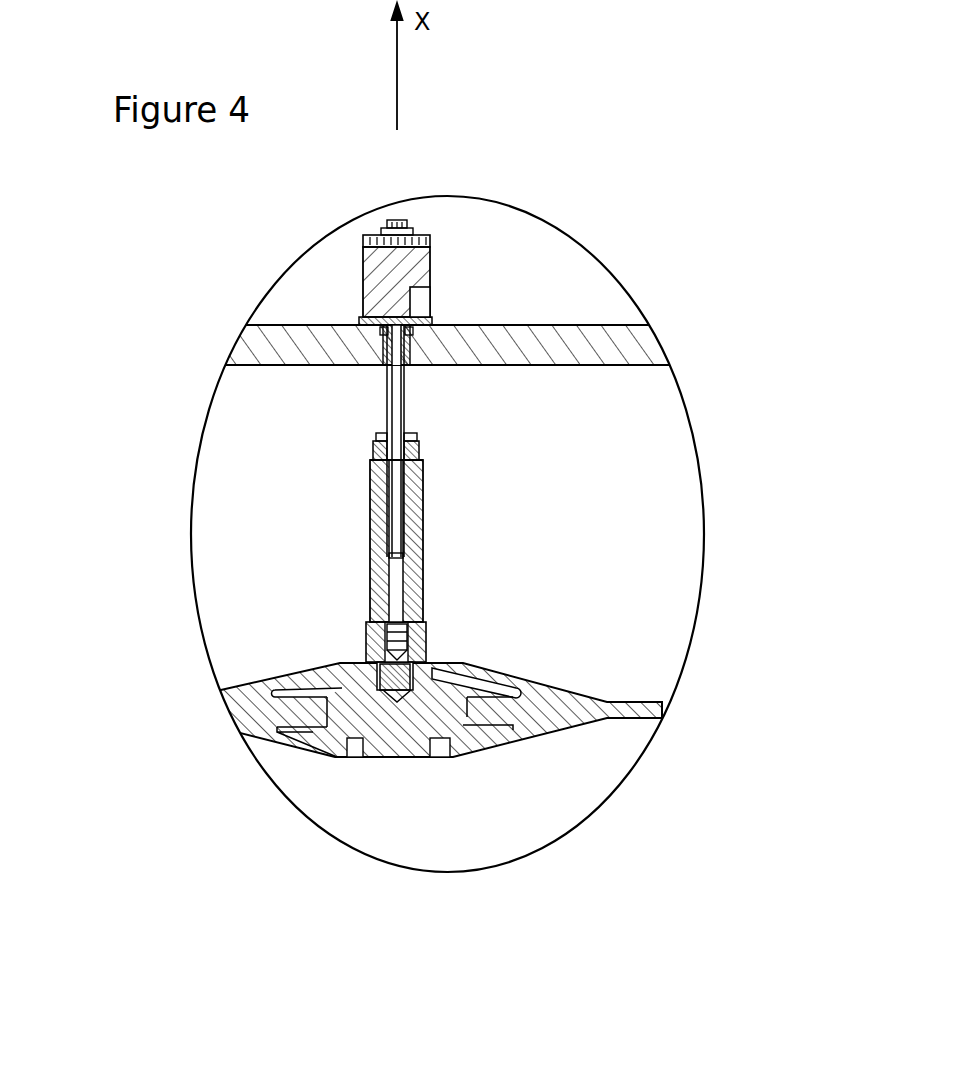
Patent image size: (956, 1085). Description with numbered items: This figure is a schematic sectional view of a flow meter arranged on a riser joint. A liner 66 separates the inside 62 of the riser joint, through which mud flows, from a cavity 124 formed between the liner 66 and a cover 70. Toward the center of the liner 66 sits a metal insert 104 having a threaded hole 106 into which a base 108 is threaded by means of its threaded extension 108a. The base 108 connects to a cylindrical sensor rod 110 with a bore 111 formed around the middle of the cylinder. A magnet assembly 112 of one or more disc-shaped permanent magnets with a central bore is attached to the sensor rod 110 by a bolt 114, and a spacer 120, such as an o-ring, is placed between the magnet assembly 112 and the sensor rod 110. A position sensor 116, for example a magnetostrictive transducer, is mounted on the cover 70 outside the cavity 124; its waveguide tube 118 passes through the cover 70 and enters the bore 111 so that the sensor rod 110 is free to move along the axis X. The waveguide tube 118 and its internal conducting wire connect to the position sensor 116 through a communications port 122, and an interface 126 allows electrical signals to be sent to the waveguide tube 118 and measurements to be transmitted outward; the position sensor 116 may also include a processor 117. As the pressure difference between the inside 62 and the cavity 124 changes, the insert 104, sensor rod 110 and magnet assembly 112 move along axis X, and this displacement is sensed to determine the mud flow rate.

The inside of the riser joint 62 is at (560, 812).
The liner 66 is at (637, 708).
The cover 70 is at (643, 343).
The insert 104 is at (452, 681).
The threaded hole 106 is at (424, 686).
The base 108 is at (370, 645).
The threaded extension 108a is at (380, 689).
The sensor rod 110 is at (363, 482).
The bore 111 is at (394, 586).
The magnet assembly 112 is at (371, 431).
The bolt 114 is at (415, 432).
The position sensor 116 is at (452, 211).
The processor 117 is at (428, 300).
The waveguide tube 118 is at (263, 554).
The spacer 120 is at (420, 458).
The communications port 122 is at (428, 318).
The cavity 124 is at (672, 557).
The interface 126 is at (399, 217).